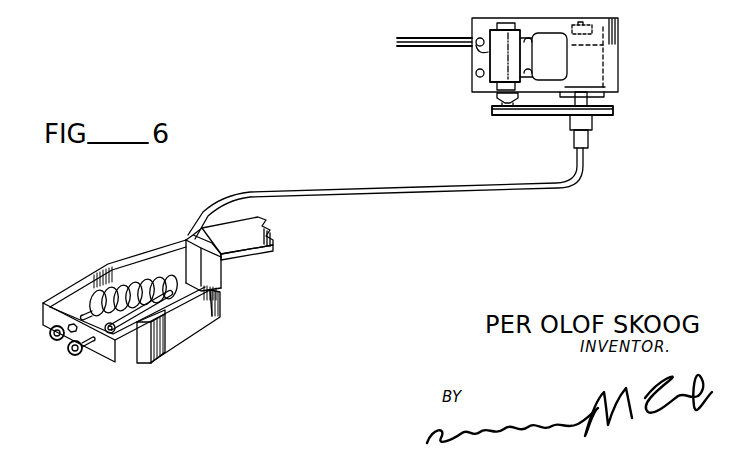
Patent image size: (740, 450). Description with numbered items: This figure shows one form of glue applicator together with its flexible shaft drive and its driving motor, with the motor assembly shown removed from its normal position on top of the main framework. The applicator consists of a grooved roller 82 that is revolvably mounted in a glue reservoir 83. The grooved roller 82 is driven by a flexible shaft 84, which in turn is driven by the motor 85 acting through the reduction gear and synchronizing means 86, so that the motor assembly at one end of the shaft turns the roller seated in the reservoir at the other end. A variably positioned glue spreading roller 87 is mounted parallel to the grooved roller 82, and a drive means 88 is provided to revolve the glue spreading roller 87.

The grooved roller 82 is at (128, 275).
The glue reservoir 83 is at (78, 294).
The flexible shaft 84 is at (422, 192).
The motor 85 is at (500, 66).
The reduction gear and synchronizing means 86 is at (616, 97).
The glue spreading roller 87 is at (176, 311).
The drive means 88 is at (80, 367).